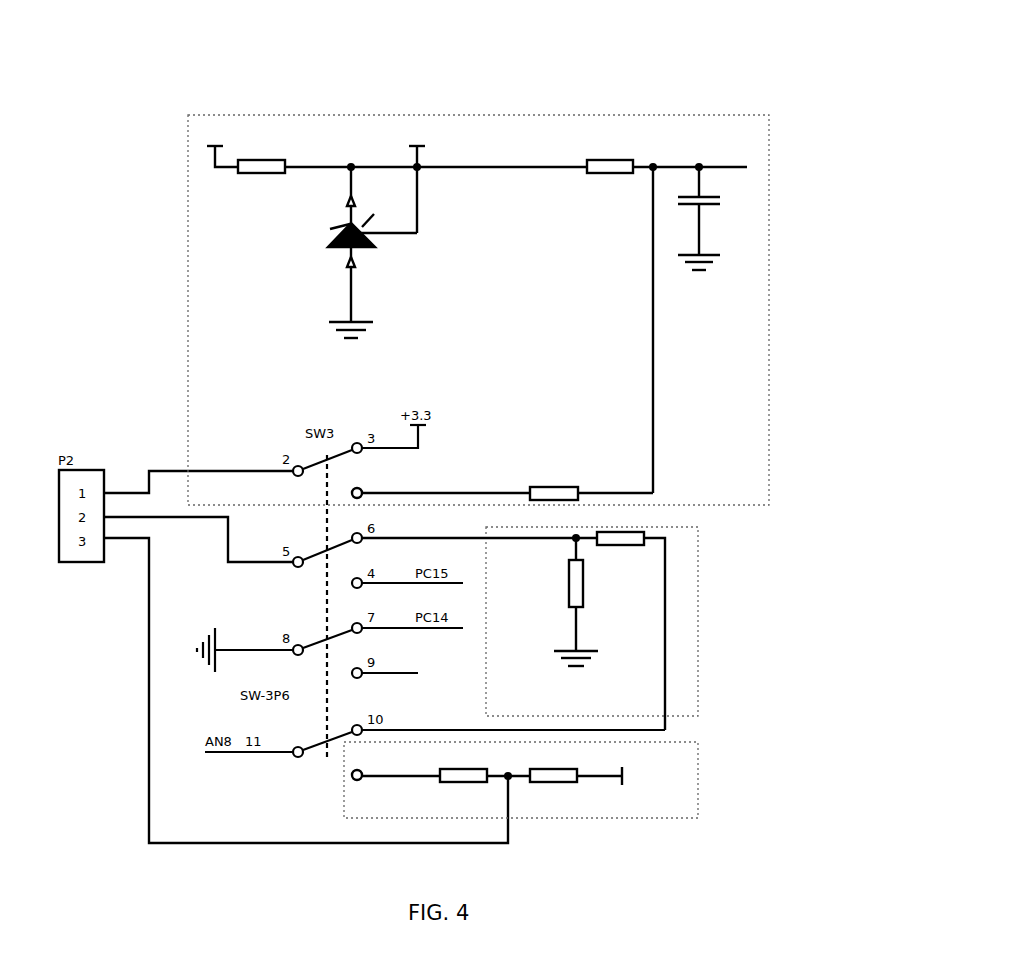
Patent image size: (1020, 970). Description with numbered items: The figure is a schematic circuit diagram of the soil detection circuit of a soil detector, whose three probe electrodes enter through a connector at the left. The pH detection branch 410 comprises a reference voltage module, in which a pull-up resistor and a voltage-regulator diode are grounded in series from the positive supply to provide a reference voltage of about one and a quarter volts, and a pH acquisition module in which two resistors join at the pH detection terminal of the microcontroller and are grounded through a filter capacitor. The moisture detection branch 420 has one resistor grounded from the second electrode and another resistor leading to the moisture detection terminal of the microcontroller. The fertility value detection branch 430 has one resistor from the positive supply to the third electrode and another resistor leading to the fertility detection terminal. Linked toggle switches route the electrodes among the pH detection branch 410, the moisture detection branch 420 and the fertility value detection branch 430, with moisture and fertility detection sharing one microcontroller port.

The pH detection branch 410 is at (478, 267).
The moisture detection branch 420 is at (616, 628).
The fertility value detection branch 430 is at (606, 752).